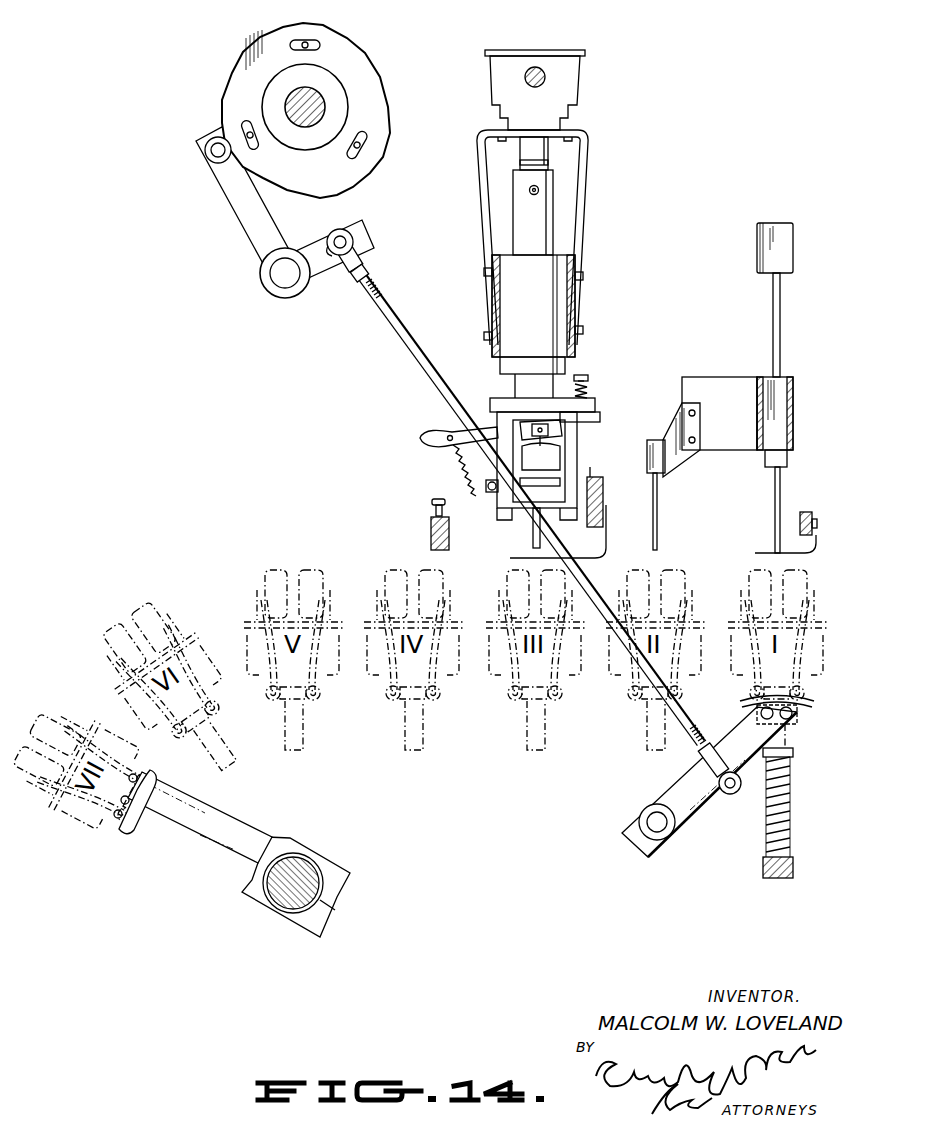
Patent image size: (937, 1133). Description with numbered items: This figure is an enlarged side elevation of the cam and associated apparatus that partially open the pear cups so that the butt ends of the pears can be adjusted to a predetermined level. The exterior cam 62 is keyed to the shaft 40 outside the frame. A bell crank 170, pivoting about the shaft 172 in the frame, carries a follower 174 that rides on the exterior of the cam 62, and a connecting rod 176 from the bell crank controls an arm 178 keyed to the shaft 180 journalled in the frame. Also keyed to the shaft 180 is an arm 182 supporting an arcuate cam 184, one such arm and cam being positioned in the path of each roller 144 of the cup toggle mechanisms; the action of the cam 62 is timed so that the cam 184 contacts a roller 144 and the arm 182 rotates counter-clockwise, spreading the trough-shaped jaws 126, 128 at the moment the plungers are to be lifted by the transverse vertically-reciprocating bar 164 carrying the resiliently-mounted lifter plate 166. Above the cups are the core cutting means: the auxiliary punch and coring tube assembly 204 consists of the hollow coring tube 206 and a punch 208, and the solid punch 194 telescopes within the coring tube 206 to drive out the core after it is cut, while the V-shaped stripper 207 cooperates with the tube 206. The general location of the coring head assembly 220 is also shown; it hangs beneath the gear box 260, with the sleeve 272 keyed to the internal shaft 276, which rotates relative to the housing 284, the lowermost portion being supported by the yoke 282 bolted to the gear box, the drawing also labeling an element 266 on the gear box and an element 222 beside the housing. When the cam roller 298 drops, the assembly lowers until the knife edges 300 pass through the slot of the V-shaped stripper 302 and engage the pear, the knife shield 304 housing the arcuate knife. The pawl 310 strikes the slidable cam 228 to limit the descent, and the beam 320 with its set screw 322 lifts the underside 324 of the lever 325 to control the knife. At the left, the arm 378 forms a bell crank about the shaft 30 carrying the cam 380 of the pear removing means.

The shaft 30 is at (291, 895).
The shaft 40 is at (320, 102).
The exterior cam 62 is at (396, 76).
The jaw 126 is at (736, 594).
The jaw 128 is at (817, 583).
The roller 144 is at (742, 698).
The transverse vertically-reciprocating bar 164 is at (794, 878).
The lifter plate 166 is at (795, 768).
The bell crank 170 is at (246, 232).
The shaft 172 is at (285, 288).
The follower 174 is at (205, 145).
The connecting rod 176 is at (412, 334).
The arm 178 is at (708, 812).
The shaft 180 is at (655, 820).
The arm 182 is at (700, 769).
The arcuate cam 184 is at (801, 722).
The punch 194 is at (774, 328).
The auxiliary punch and coring tube assembly 204 is at (716, 375).
The hollow coring tube 206 is at (774, 495).
The V-shaped stripper 207 is at (762, 548).
The punch 208 is at (658, 527).
The coring head assembly 220 is at (600, 255).
The block 222 is at (600, 478).
The cam 228 is at (592, 476).
The gear box 260 is at (572, 96).
The pin 266 is at (547, 79).
The sleeve 272 is at (550, 152).
The internal shaft 276 is at (522, 166).
The yoke 282 is at (487, 216).
The housing 284 is at (549, 220).
The cam roller 298 is at (540, 190).
The knife edges 300 is at (510, 518).
The V-shaped stripper 302 is at (606, 556).
The knife shield 304 is at (533, 538).
The pawl 310 is at (600, 412).
The beam 320 is at (430, 538).
The set screw 322 is at (430, 504).
The underside of lever 324 is at (426, 446).
The lever 325 is at (458, 432).
The arm 378 is at (230, 836).
The cam 380 is at (124, 832).